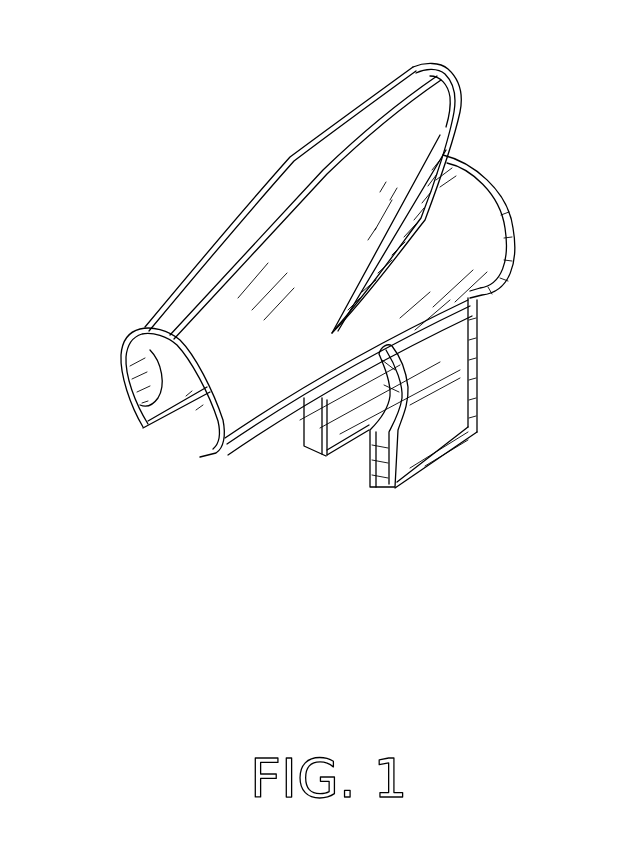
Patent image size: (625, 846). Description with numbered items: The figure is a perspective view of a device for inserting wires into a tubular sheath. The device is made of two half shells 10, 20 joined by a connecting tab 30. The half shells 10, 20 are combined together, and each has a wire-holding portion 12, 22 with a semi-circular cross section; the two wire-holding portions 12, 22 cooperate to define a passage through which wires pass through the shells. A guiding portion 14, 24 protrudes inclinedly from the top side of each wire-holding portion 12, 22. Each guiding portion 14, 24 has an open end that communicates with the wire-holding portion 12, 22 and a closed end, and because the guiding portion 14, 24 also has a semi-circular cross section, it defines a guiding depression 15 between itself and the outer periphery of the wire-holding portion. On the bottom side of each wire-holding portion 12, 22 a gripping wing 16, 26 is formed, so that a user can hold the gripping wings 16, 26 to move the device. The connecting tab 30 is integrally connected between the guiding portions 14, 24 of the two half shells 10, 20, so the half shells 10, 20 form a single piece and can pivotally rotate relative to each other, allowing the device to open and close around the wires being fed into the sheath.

The half shell 10 is at (492, 314).
The wire-holding portion 12 is at (470, 200).
The guiding portion 14 is at (440, 132).
The guiding depression 15 is at (357, 293).
The gripping wing 16 is at (443, 417).
The half shell 20 is at (284, 169).
The wire-holding portion 22 is at (143, 407).
The guiding portion 24 is at (305, 160).
The gripping wing 26 is at (340, 403).
The connecting tab 30 is at (343, 150).